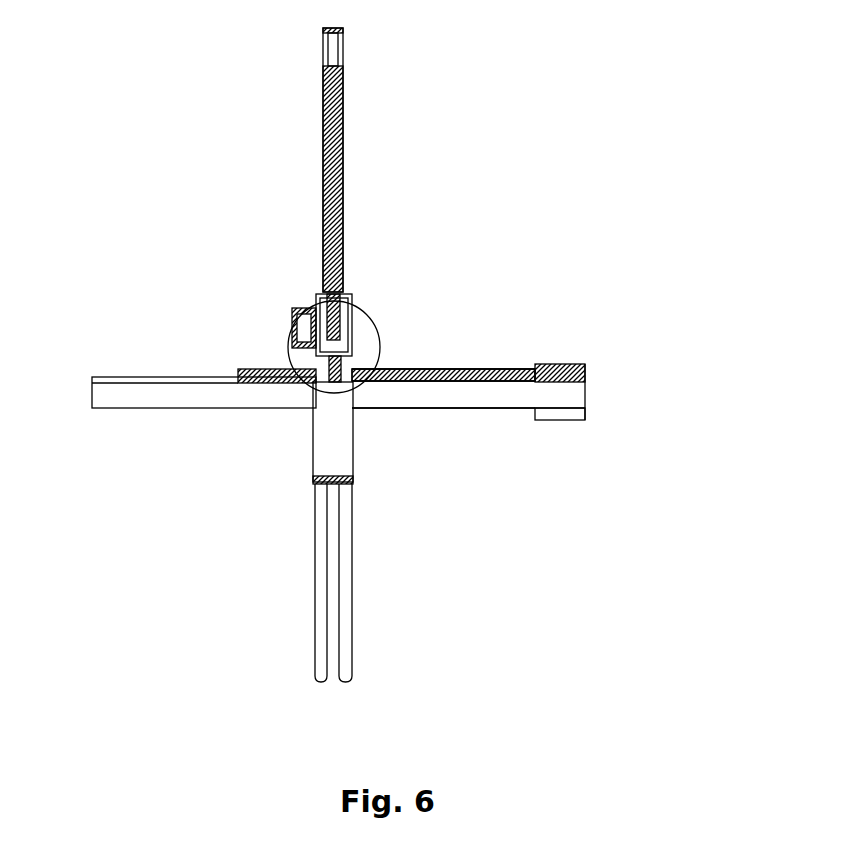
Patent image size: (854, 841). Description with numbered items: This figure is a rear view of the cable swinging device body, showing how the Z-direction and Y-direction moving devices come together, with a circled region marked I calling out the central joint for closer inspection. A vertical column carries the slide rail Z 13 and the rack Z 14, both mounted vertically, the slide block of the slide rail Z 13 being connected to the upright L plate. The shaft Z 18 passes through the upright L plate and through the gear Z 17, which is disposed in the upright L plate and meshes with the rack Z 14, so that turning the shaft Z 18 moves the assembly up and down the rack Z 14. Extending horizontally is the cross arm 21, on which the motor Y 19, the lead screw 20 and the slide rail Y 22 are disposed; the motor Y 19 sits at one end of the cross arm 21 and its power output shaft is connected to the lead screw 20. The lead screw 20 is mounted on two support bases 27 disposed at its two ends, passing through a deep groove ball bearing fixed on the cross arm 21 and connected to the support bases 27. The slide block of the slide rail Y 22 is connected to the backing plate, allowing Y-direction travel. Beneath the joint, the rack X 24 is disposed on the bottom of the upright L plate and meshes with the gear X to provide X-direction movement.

The rack Z 14 is at (341, 68).
The slide rail Z 13 is at (346, 292).
The gear Z 17 is at (350, 312).
The shaft Z 18 is at (352, 348).
The lead screw 20 is at (455, 370).
The support base 27 is at (520, 370).
The motor Y 19 is at (550, 365).
The cross arm 21 is at (563, 394).
The slide rail Y 22 is at (480, 382).
The rack X 24 is at (355, 388).
The detail region I is at (290, 336).